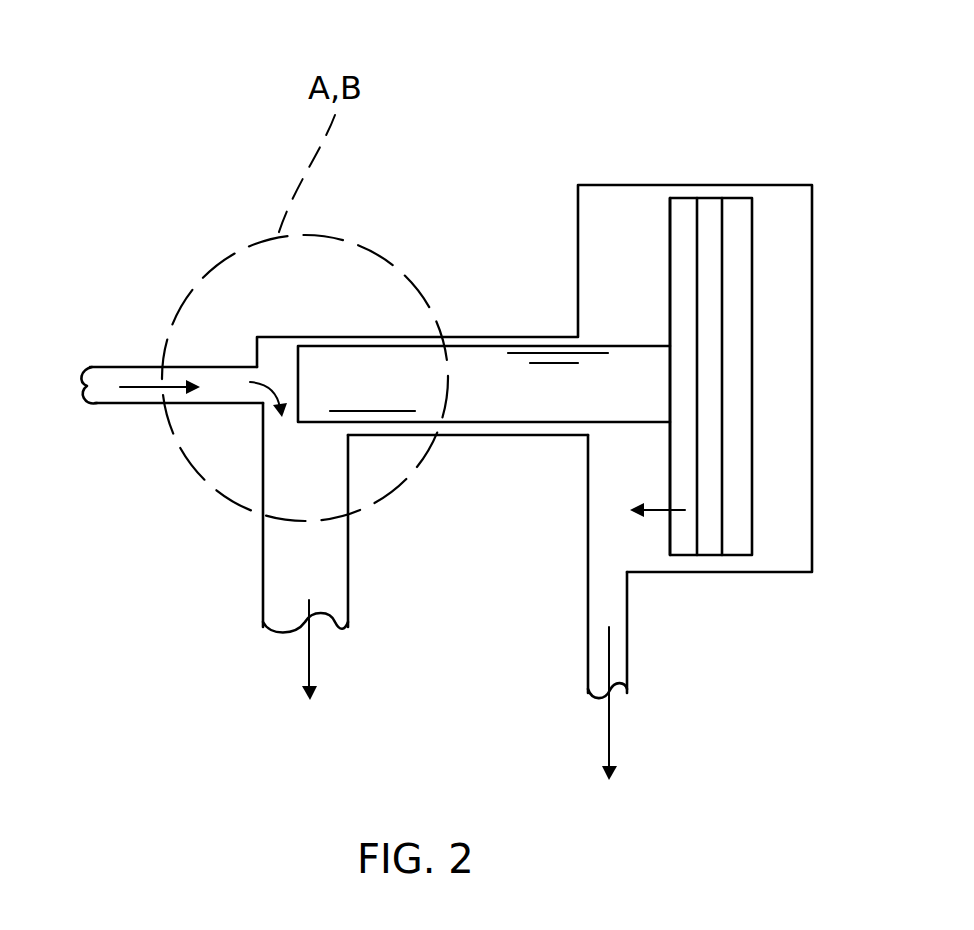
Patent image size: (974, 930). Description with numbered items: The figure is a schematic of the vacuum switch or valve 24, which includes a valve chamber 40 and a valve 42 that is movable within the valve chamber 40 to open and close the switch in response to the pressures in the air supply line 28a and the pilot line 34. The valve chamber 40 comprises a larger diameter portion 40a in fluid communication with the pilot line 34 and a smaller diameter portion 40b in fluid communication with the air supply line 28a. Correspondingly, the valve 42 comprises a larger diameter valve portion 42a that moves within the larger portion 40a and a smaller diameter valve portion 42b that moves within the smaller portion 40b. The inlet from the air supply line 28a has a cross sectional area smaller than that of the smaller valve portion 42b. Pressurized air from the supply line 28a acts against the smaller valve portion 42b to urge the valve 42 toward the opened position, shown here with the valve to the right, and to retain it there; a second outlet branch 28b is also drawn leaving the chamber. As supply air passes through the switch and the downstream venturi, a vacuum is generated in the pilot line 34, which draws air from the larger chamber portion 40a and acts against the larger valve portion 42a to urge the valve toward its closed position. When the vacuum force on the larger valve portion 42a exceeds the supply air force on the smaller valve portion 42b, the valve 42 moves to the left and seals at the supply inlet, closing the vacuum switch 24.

The vacuum switch 24 is at (719, 122).
The air supply line 28a is at (128, 375).
The bypass outlet conduit 28b is at (337, 584).
The pilot line 34 is at (628, 656).
The valve chamber 40 is at (545, 283).
The larger diameter portion 40a is at (608, 538).
The smaller diameter portion 40b is at (285, 352).
The valve 42 is at (762, 331).
The larger diameter valve portion 42a is at (670, 290).
The smaller diameter valve portion 42b is at (497, 430).